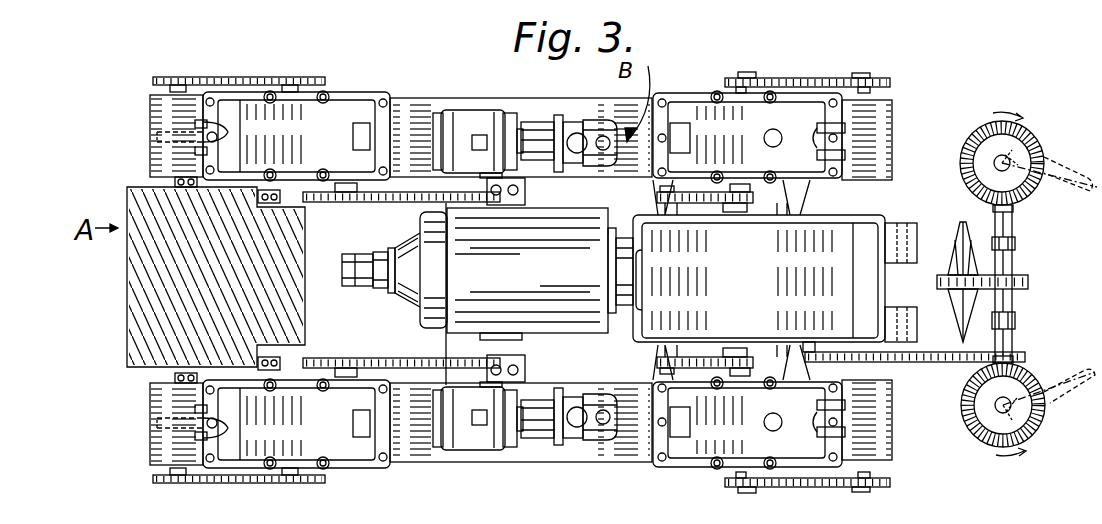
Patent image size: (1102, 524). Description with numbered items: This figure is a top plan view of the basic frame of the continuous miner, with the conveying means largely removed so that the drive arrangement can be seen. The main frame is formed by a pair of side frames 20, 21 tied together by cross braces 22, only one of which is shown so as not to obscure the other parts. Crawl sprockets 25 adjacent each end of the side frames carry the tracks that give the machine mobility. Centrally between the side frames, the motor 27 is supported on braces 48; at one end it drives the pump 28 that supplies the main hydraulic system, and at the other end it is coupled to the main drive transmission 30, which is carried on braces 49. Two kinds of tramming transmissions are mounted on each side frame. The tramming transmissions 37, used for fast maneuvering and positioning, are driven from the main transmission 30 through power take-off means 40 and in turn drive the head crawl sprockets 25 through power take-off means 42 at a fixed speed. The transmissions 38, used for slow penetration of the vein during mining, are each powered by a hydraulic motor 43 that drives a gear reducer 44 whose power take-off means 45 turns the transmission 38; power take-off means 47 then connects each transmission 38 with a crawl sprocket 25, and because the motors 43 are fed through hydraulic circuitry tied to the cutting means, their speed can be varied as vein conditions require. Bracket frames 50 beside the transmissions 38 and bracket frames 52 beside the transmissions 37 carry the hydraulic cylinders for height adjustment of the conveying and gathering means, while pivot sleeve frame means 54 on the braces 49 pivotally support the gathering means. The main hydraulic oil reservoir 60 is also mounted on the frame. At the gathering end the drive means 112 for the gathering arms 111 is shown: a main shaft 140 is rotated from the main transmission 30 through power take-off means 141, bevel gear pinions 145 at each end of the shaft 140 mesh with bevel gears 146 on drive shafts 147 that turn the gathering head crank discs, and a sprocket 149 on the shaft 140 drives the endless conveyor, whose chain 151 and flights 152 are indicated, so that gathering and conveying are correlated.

The side frame 20 is at (420, 455).
The side frame 21 is at (415, 108).
The cross brace 22 is at (268, 204).
The sprocket 25 is at (156, 137).
The motor 27 is at (538, 280).
The pump 28 is at (362, 258).
The main drive transmission 30 is at (762, 286).
The tramming transmission 37 is at (749, 151).
The tramming transmission 38 is at (296, 151).
The power take-off means 40 is at (720, 204).
The power take-off means 42 is at (834, 58).
The hydraulic motor 43 is at (573, 130).
The gear reducer 44 is at (465, 120).
The power take-off means 45 is at (412, 202).
The power take-off means 47 is at (266, 54).
The brace 48 is at (525, 190).
The brace 49 is at (652, 200).
The bracket frame 50 is at (196, 124).
The bracket frame 52 is at (845, 152).
The pivot sleeve frame means 54 is at (902, 308).
The main hydraulic oil reservoir 60 is at (137, 318).
The gathering arm 111 is at (1060, 148).
The drive means 112 is at (962, 377).
The main shaft 140 is at (1015, 246).
The power take-off means 141 is at (948, 363).
The bevel gear pinion 145 is at (1025, 200).
The bevel gear 146 is at (974, 142).
The drive shaft 147 is at (1000, 163).
The sprocket 149 is at (1013, 300).
The chain 151 is at (1028, 282).
The flight 152 is at (959, 232).